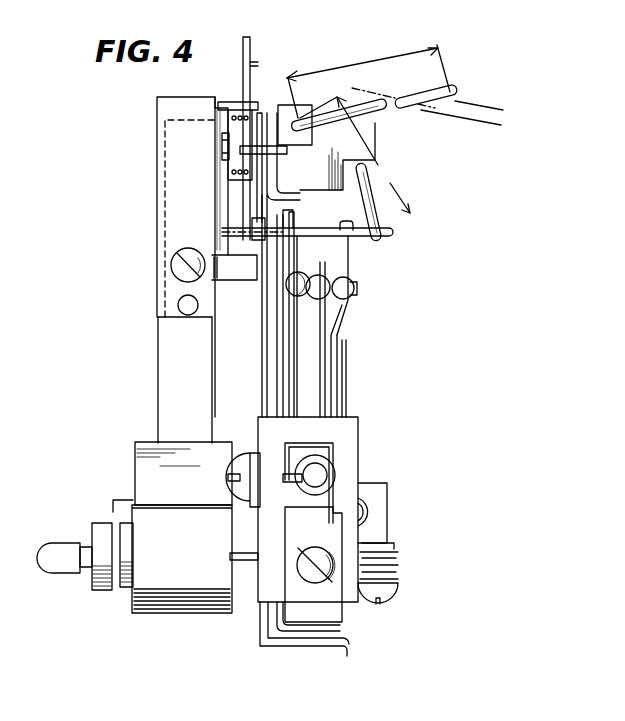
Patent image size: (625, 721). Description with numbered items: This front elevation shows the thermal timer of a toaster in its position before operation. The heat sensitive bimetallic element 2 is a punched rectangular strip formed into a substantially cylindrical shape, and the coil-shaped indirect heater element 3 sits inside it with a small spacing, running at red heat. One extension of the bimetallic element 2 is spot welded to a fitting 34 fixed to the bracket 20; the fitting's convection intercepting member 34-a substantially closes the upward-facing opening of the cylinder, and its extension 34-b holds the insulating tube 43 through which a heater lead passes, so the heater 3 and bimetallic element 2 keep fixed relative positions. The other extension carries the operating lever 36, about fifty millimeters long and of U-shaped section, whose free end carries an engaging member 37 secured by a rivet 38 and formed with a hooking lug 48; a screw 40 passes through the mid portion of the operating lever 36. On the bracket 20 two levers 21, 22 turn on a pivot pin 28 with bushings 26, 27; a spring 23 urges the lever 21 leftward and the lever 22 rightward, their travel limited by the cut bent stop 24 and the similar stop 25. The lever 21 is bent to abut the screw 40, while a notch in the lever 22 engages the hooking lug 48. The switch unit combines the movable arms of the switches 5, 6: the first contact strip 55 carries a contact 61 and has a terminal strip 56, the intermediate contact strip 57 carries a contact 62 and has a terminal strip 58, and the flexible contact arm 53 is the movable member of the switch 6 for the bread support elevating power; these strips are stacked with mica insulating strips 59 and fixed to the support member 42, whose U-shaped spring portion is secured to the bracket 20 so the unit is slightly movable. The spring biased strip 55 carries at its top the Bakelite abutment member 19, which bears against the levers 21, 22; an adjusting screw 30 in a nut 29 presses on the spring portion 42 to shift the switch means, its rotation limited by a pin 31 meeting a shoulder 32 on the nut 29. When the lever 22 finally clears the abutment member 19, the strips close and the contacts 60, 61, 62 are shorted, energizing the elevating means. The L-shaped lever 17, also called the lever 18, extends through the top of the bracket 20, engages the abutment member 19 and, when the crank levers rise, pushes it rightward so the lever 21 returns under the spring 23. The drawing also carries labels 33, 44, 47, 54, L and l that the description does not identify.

The heat sensitive bimetallic element 2 is at (182, 615).
The indirect heater element 3 is at (236, 562).
The switch 5 is at (324, 279).
The switch 6 is at (302, 279).
The L-shaped lever 17 is at (370, 125).
The lever 18 is at (448, 110).
The abutment member 19 is at (380, 236).
The bracket 20 is at (267, 326).
The lever 21 is at (258, 126).
The lever 22 is at (250, 44).
The spring 23 is at (228, 193).
The cut bent stop 24 is at (233, 243).
The stop 25 is at (240, 151).
The bushing 26 is at (270, 176).
The bushing 27 is at (240, 130).
The pivot pin 28 is at (222, 142).
The nut 29 is at (322, 470).
The adjusting screw 30 is at (322, 482).
The pin 31 is at (285, 478).
The shoulder 32 is at (310, 456).
The plate 33 is at (258, 600).
The fitting 34 is at (262, 410).
The convection intercepting member 34-a is at (138, 443).
The extension of the fitting 34-b is at (108, 592).
The operating lever 36 is at (160, 334).
The engaging member 37 is at (157, 229).
The rivet 38 is at (178, 303).
The screw 40 is at (171, 268).
The support member 42 is at (312, 622).
The insulating tube 43 is at (127, 592).
The lamp 44 is at (64, 574).
The bracket 47 is at (274, 612).
The hooking lug 48 is at (250, 98).
The flexible contact arm 53 is at (289, 368).
The bar 54 is at (293, 222).
The first contact strip 55 is at (350, 263).
The terminal strip 56 is at (346, 361).
The second contact strip 57 is at (331, 328).
The terminal strip 58 is at (325, 383).
The insulating strip 59 is at (280, 353).
The contact 60 is at (293, 288).
The contact 61 is at (345, 299).
The contact 62 is at (354, 290).
The length L is at (368, 68).
The length l is at (355, 155).